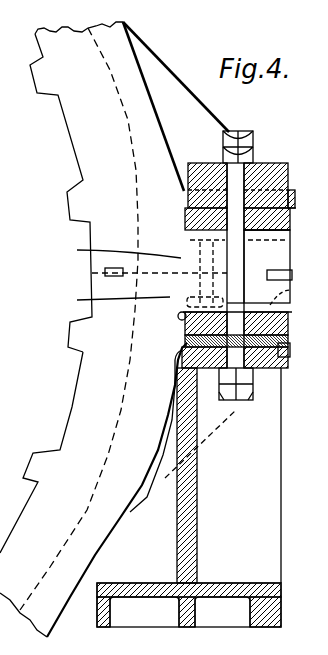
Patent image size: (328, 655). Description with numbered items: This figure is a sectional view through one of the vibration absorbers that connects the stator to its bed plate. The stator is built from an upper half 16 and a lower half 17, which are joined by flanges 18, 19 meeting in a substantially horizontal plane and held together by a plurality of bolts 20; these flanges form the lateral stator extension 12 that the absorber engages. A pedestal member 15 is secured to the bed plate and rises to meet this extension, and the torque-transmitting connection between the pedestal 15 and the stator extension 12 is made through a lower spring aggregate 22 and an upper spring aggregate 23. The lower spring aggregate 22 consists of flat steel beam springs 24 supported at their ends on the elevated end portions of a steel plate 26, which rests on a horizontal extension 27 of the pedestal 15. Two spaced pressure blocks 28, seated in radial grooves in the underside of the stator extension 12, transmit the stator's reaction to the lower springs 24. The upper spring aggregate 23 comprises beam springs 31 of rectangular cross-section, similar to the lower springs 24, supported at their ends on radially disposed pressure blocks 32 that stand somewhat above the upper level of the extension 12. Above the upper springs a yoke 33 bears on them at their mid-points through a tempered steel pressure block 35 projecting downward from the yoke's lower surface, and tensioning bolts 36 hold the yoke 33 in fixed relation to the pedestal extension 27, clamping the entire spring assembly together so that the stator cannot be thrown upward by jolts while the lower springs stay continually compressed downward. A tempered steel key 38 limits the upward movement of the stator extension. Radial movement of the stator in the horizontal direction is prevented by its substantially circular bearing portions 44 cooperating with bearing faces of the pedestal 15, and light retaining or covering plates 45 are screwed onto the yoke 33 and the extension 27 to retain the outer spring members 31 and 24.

The horizontal stator extension 12 is at (282, 250).
The pedestal member 15 is at (202, 493).
The upper stator half 16 is at (55, 70).
The lower stator half 17 is at (70, 420).
The flange 18 is at (118, 251).
The flange 19 is at (141, 289).
The bolt 20 is at (188, 240).
The lower spring aggregate 22 is at (182, 338).
The upper spring aggregate 23 is at (185, 216).
The beam spring 24 is at (288, 322).
The steel plate 26 is at (290, 341).
The horizontal extension 27 is at (270, 372).
The pressure block 28 is at (290, 292).
The beam spring 31 is at (290, 209).
The pressure block 32 is at (264, 243).
The yoke 33 is at (289, 177).
The pressure block 35 is at (295, 194).
The tensioning bolt 36 is at (258, 162).
The key 38 is at (290, 223).
The bearing portion 44 is at (184, 191).
The retaining plate 45 is at (291, 180).